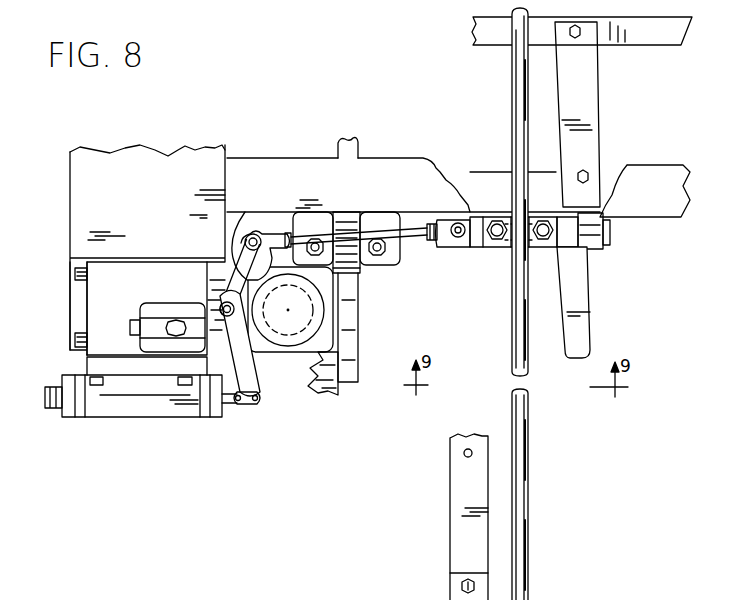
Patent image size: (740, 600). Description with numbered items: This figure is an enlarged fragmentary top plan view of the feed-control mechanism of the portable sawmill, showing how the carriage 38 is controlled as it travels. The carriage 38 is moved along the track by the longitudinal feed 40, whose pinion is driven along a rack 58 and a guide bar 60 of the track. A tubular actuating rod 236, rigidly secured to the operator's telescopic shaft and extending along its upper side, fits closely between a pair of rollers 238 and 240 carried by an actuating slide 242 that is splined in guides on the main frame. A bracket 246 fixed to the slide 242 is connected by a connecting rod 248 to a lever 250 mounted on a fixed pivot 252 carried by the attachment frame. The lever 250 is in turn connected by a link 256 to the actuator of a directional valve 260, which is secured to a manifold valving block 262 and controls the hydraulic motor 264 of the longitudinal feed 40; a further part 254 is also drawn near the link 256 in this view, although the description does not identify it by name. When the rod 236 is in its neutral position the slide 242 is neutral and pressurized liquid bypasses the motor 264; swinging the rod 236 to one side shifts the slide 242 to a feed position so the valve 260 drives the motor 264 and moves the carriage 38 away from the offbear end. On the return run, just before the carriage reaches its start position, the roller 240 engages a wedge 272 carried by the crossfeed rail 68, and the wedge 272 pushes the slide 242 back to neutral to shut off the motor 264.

The carriage 38 is at (302, 158).
The longitudinal feed 40 is at (343, 303).
The rack 58 is at (330, 392).
The guide bar 60 is at (350, 368).
The crossfeed rail 68 is at (483, 41).
The tubular actuating rod 236 is at (517, 582).
The roller 238 is at (495, 248).
The roller 240 is at (564, 243).
The actuating slide 242 is at (572, 240).
The bracket 246 is at (472, 246).
The connecting rod 248 is at (387, 233).
The lever 250 is at (243, 212).
The fixed pivot 252 is at (219, 303).
The piston rod 254 is at (228, 406).
The link 256 is at (251, 403).
The directional valve 260 is at (108, 409).
The manifold valving block 262 is at (96, 328).
The hydraulic motor 264 is at (318, 324).
The wedge 272 is at (582, 333).